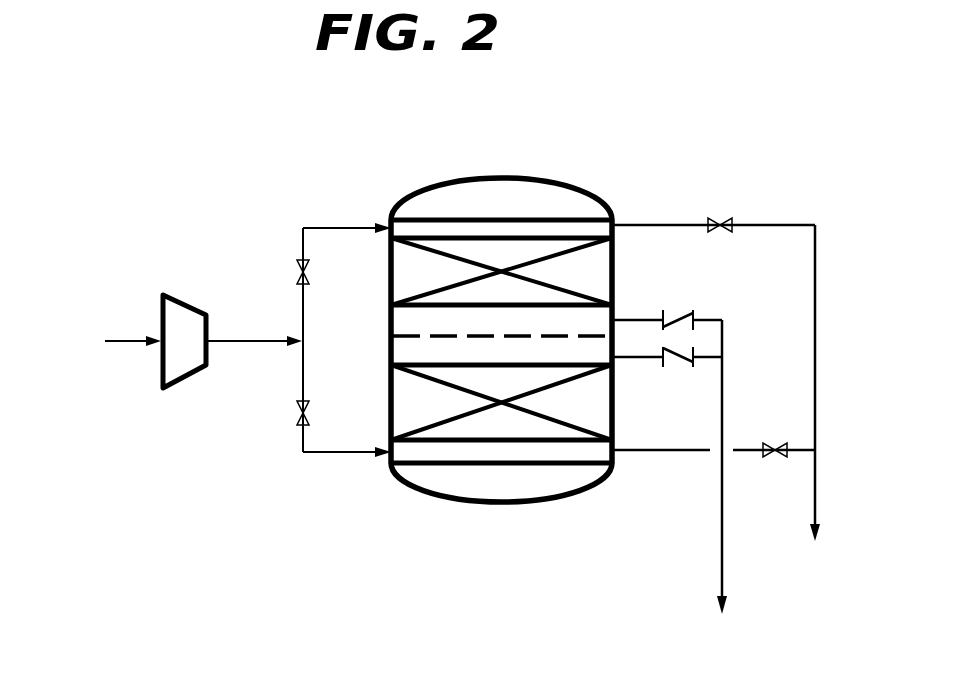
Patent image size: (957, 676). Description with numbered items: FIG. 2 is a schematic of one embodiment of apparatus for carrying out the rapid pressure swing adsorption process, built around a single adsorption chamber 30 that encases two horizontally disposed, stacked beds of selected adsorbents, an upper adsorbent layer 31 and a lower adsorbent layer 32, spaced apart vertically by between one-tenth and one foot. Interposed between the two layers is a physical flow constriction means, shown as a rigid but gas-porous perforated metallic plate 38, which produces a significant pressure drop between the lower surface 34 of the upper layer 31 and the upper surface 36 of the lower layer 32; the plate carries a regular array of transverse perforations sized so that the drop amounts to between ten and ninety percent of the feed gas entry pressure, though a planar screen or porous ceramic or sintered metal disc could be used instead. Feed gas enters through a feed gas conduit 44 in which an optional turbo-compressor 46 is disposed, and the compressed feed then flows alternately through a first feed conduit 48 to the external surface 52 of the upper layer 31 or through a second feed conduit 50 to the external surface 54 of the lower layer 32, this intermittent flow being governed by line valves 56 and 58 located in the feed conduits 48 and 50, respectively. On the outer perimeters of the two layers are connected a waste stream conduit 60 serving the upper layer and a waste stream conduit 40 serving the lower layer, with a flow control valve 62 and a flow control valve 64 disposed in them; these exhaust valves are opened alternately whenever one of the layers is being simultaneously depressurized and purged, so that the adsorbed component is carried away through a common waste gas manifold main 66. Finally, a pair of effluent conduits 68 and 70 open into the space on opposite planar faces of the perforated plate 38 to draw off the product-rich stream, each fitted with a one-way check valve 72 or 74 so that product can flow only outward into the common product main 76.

The adsorption chamber 30 is at (426, 192).
The upper adsorbent layer 31 is at (624, 262).
The lower adsorbent layer 32 is at (615, 440).
The lower surface 34 is at (392, 307).
The upper surface 36 is at (392, 362).
The perforated metallic plate 38 is at (392, 337).
The waste stream conduit 40 is at (700, 458).
The feed gas conduit 44 is at (126, 341).
The turbo-compressor 46 is at (208, 322).
The feed conduit 48 is at (326, 228).
The feed conduit 50 is at (326, 455).
The external surface 52 is at (513, 236).
The external surface 54 is at (488, 452).
The line valve 56 is at (309, 272).
The line valve 58 is at (297, 413).
The waste stream conduit 60 is at (640, 224).
The flow control valve 62 is at (716, 219).
The flow control valve 64 is at (770, 444).
The common waste gas manifold main 66 is at (818, 496).
The effluent conduit 68 is at (632, 319).
The effluent conduit 70 is at (641, 359).
The one-way check valve 72 is at (690, 312).
The one-way check valve 74 is at (690, 364).
The common product main 76 is at (720, 531).